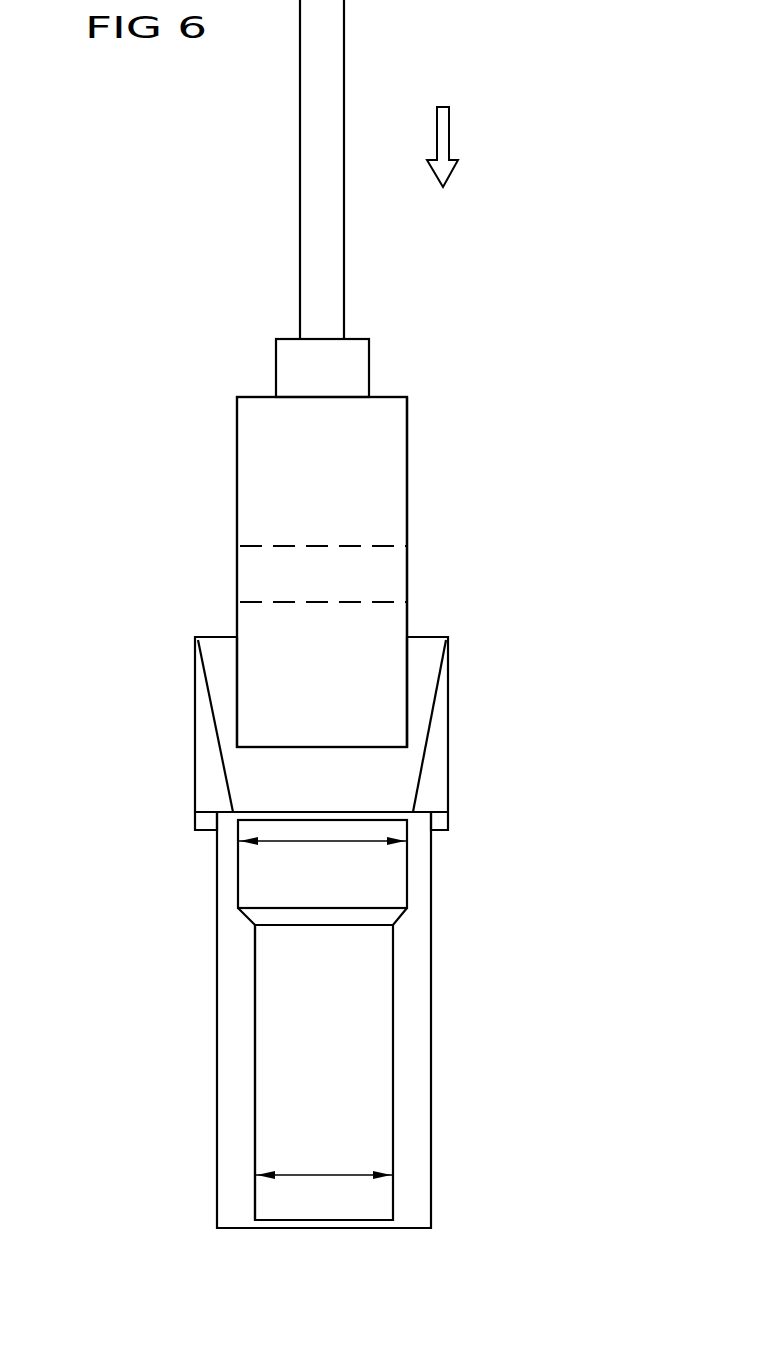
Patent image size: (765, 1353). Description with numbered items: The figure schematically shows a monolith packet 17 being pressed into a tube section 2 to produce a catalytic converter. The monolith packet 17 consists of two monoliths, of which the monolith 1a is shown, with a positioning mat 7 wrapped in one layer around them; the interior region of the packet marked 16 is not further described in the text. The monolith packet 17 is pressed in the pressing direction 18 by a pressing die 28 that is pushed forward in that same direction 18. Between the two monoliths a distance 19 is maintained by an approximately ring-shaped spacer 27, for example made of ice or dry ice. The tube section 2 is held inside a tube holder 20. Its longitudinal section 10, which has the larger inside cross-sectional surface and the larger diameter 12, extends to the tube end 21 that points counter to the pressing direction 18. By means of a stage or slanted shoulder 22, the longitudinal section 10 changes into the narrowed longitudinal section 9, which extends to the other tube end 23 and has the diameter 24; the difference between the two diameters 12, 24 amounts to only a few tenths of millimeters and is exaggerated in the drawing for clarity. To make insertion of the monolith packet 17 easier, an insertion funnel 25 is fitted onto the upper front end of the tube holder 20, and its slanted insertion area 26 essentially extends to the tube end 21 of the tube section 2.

The pressing direction 18 is at (447, 132).
The pressing die 28 is at (291, 363).
The positioning mat 7 is at (377, 412).
The punch inner portion 16 is at (342, 468).
The monolith packet 17 is at (412, 474).
The distance 19 is at (237, 545).
The spacer 27 is at (382, 577).
The monolith 1a is at (360, 688).
The insertion funnel 25 is at (437, 758).
The slanted insertion area 26 is at (417, 775).
The tube holder 20 is at (433, 1138).
The longitudinal section 10 is at (392, 880).
The tube end 21 is at (295, 820).
The diameter 12 is at (320, 843).
The slanted shoulder 22 is at (392, 917).
The narrowed longitudinal section 9 is at (255, 1022).
The tube section 2 is at (397, 1025).
The diameter 24 is at (330, 1173).
The tube end 23 is at (275, 1222).